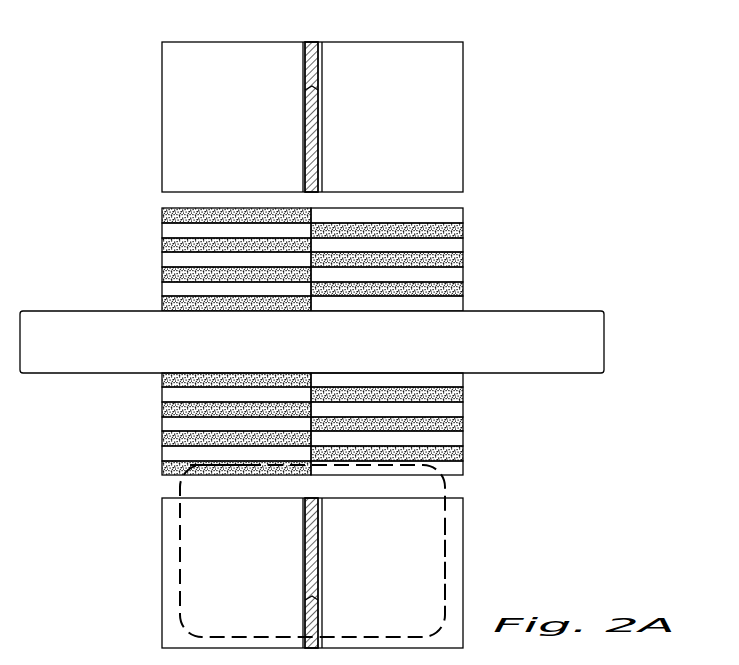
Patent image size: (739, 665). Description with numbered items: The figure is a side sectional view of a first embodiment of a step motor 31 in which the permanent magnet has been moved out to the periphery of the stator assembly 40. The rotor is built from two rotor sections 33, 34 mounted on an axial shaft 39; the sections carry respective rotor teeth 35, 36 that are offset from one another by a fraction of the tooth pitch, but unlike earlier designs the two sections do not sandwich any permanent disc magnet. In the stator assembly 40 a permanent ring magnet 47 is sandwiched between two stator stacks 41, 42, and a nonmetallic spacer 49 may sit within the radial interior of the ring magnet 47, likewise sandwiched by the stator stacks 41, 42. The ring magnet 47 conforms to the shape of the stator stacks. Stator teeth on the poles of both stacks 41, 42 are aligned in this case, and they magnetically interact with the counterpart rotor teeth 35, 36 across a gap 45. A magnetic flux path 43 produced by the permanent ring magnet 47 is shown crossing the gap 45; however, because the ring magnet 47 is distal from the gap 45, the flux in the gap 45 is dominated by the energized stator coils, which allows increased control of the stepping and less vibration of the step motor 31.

The step motor 31 is at (84, 72).
The rotor section 33 is at (162, 394).
The rotor section 34 is at (463, 407).
The rotor teeth 35 is at (162, 216).
The rotor teeth 36 is at (463, 232).
The axial shaft 39 is at (52, 310).
The stator assembly 40 is at (162, 104).
The stator stack 41 is at (170, 565).
The stator stack 42 is at (455, 516).
The magnetic flux path 43 is at (443, 586).
The gap 45 is at (159, 485).
The ring magnet 47 is at (313, 41).
The nonmetallic spacer 49 is at (318, 132).